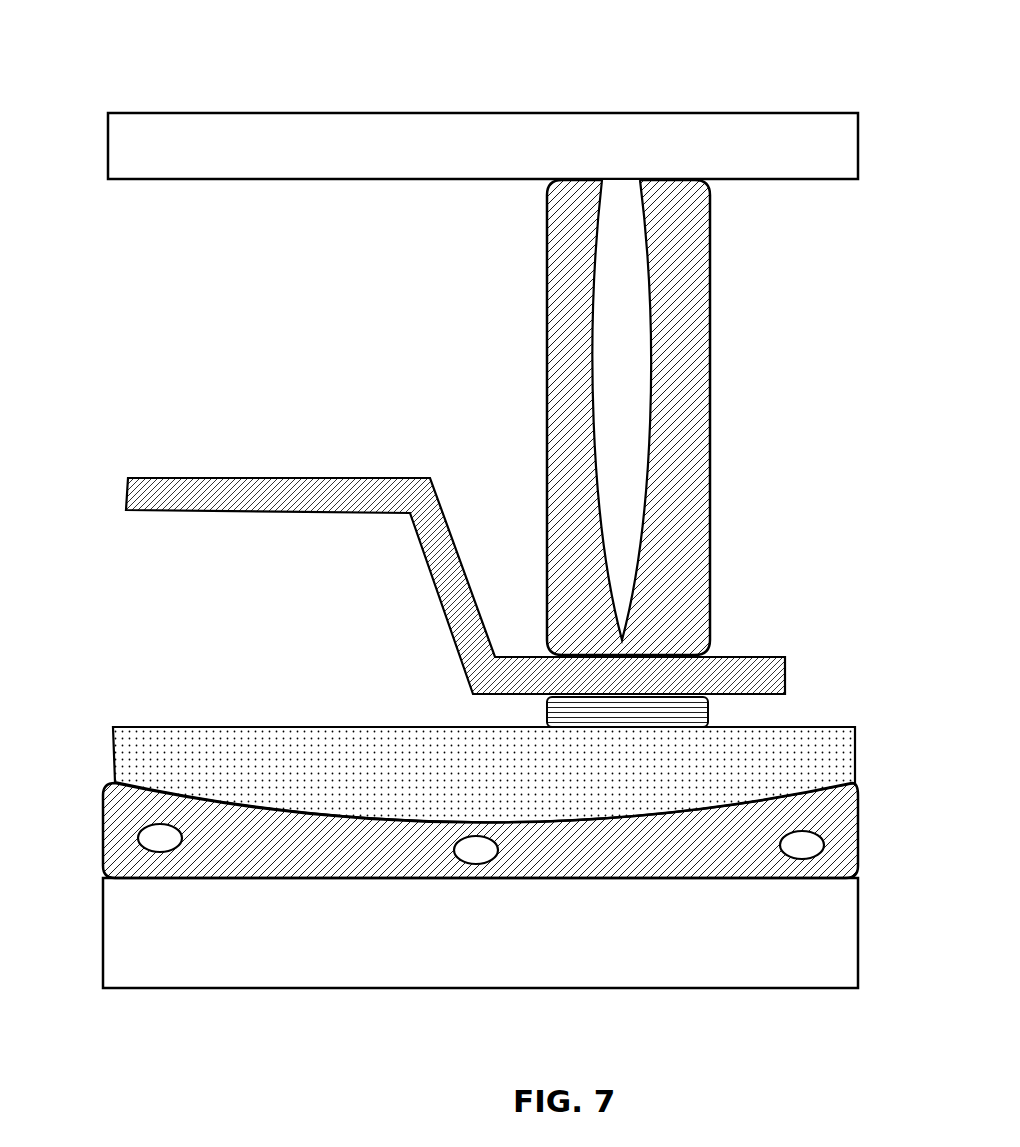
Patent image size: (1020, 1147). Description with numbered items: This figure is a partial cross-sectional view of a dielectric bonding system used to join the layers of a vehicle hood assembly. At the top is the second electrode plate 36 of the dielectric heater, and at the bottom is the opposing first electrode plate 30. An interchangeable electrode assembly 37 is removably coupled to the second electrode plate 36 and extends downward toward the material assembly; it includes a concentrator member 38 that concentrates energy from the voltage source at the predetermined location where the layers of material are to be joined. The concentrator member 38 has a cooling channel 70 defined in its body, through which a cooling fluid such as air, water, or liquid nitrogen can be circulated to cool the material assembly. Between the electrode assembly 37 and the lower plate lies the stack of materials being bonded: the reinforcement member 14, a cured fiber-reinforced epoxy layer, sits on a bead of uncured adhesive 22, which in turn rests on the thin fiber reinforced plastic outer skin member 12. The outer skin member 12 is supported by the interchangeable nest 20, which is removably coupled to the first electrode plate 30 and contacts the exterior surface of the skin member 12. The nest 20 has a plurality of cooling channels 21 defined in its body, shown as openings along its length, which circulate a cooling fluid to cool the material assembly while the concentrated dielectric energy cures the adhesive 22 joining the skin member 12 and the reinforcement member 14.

The outer skin member 12 is at (350, 752).
The reinforcement member 14 is at (350, 493).
The interchangeable nest 20 is at (130, 810).
The cooling channels 21 is at (157, 843).
The uncured adhesive 22 is at (683, 713).
The first electrode plate 30 is at (235, 935).
The second electrode plate 36 is at (814, 143).
The interchangeable electrode assembly 37 is at (712, 232).
The concentrator member 38 is at (667, 325).
The cooling channels 70 is at (614, 597).